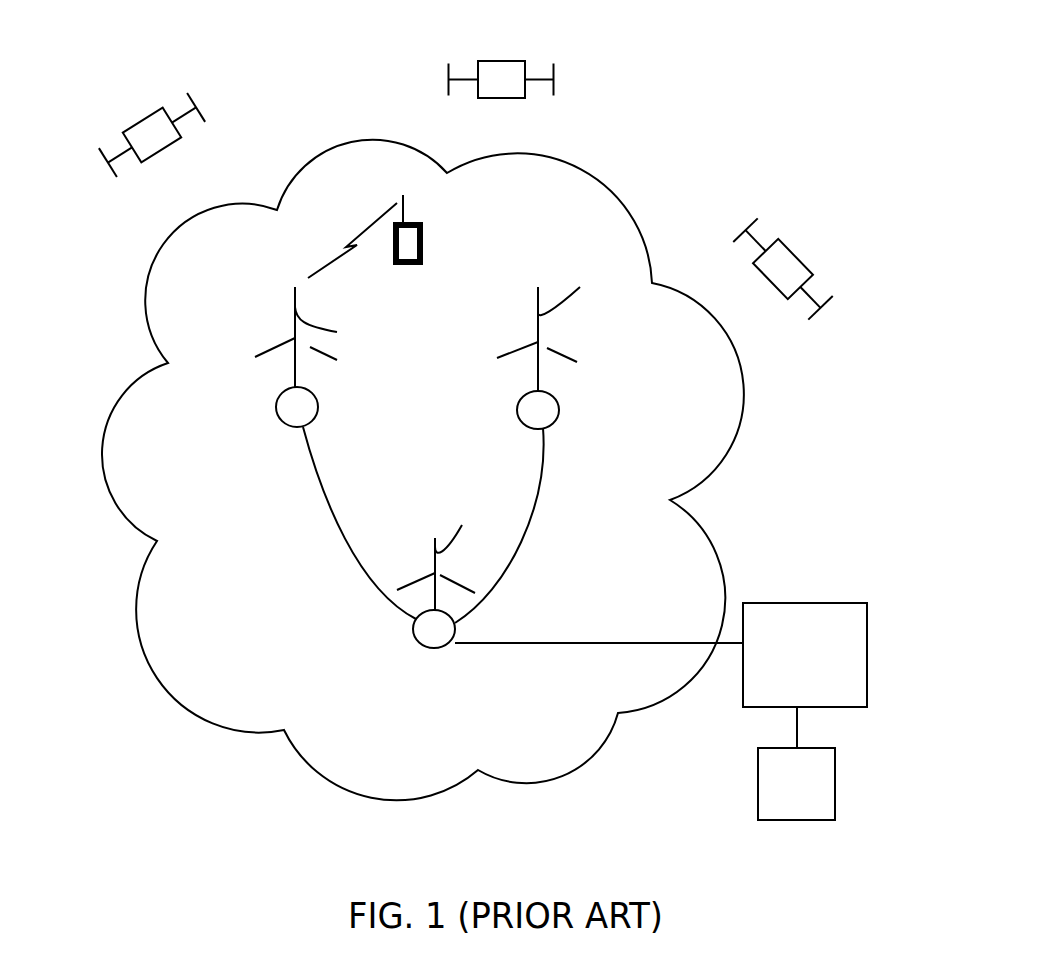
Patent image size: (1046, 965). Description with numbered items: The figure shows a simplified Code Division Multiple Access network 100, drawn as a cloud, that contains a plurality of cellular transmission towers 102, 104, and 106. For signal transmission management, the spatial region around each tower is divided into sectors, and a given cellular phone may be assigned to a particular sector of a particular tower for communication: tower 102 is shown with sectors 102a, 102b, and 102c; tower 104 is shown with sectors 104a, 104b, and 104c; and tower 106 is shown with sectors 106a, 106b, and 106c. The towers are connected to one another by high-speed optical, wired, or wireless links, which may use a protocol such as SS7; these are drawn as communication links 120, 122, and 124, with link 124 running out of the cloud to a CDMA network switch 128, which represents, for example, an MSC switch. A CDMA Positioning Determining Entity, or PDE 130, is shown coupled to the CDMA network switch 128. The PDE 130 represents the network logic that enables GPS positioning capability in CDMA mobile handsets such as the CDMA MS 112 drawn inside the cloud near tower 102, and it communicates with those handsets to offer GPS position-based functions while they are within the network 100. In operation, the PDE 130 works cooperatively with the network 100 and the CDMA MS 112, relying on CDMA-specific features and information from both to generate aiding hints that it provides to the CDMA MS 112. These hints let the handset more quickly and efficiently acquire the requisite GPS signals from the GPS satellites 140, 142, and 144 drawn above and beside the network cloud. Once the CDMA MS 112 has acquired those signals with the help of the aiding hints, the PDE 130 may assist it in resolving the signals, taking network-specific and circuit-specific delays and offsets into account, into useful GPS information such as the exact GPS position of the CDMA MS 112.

The CDMA network 100 is at (333, 686).
The cellular transmission tower 102 is at (270, 410).
The sector 102a is at (270, 347).
The sector 102b is at (341, 326).
The sector 102c is at (310, 349).
The cellular transmission tower 104 is at (425, 647).
The sector 104a is at (415, 582).
The sector 104b is at (462, 521).
The sector 104c is at (467, 587).
The cellular transmission tower 106 is at (560, 415).
The sector 106a is at (523, 347).
The sector 106b is at (583, 290).
The sector 106c is at (547, 351).
The CDMA MS 112 is at (423, 242).
The communication link 120 is at (330, 510).
The communication link 122 is at (543, 492).
The communication link 124 is at (582, 642).
The CDMA network switch 128 is at (813, 603).
The CDMA Positioning Determining Entity (PDE) 130 is at (815, 748).
The GPS satellite 140 is at (138, 127).
The GPS satellite 142 is at (490, 60).
The GPS satellite 144 is at (790, 248).